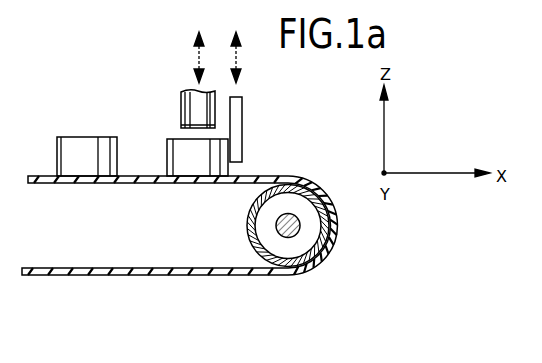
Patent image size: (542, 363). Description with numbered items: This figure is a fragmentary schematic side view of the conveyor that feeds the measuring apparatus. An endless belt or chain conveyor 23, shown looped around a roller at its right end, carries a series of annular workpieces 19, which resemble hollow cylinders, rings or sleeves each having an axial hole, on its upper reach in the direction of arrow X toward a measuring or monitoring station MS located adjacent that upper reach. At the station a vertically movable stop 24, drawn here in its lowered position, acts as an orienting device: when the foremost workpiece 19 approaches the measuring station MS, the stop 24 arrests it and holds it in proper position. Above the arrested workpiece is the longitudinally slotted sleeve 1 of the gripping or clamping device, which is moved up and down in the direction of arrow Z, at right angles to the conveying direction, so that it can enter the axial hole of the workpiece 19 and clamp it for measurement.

The longitudinally slotted sleeve 1 is at (190, 110).
The annular workpieces 19 is at (182, 167).
The endless belt or chain conveyor 23 is at (167, 277).
The vertically movable stop 24 is at (242, 127).
The measuring station MS is at (157, 135).